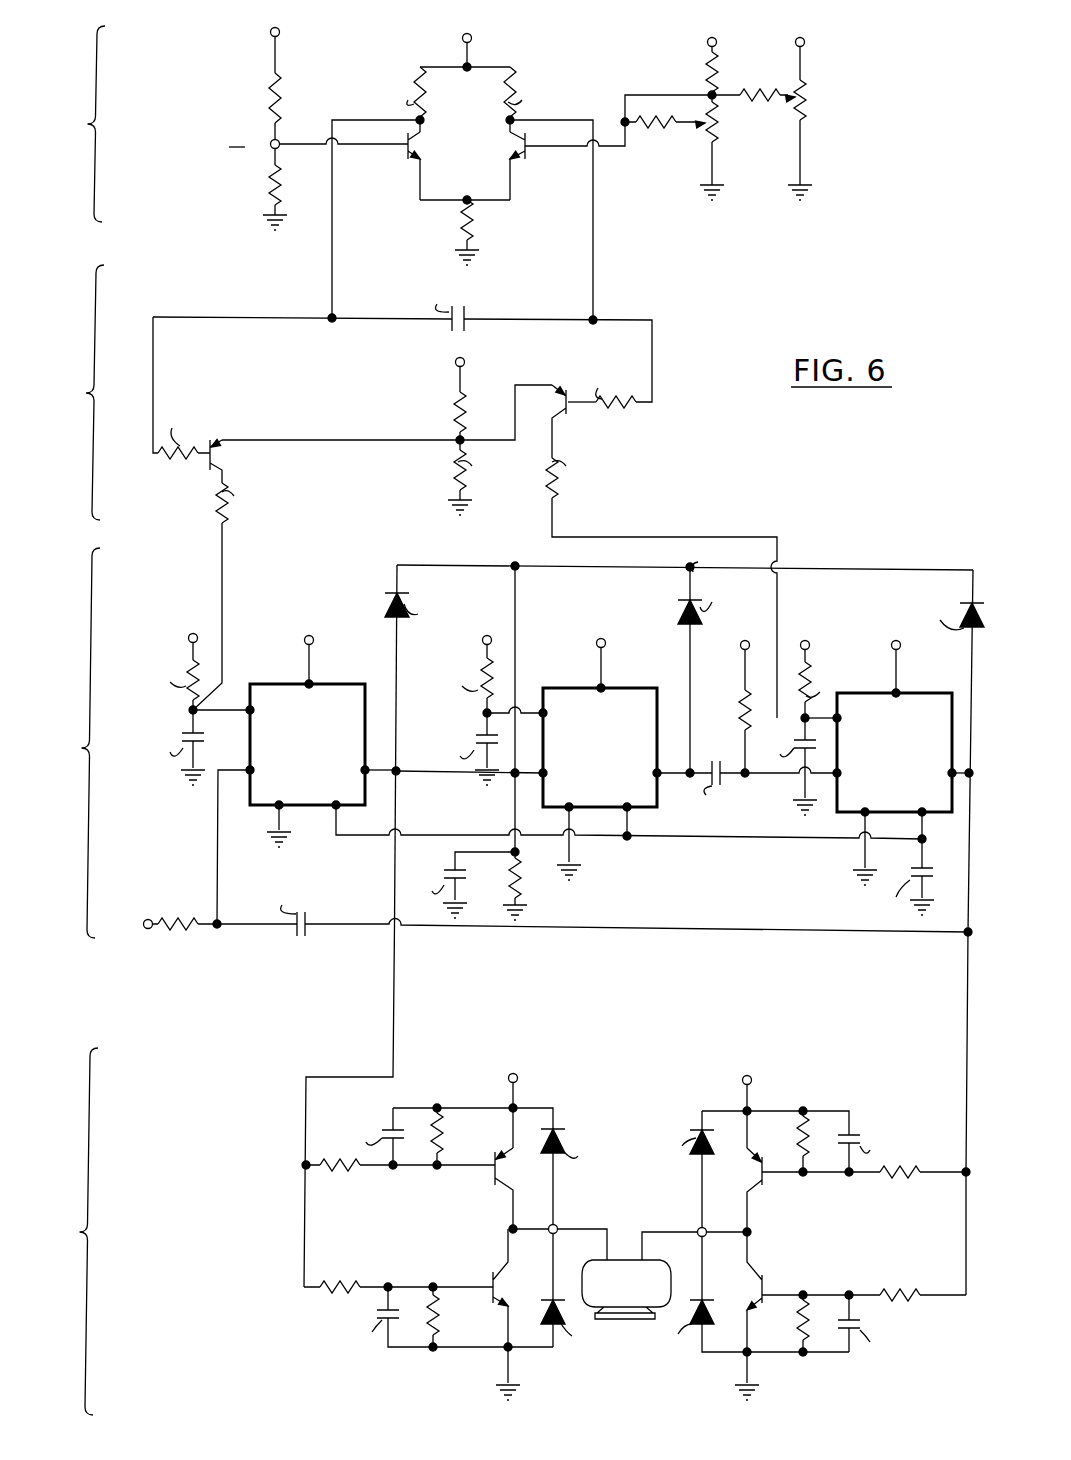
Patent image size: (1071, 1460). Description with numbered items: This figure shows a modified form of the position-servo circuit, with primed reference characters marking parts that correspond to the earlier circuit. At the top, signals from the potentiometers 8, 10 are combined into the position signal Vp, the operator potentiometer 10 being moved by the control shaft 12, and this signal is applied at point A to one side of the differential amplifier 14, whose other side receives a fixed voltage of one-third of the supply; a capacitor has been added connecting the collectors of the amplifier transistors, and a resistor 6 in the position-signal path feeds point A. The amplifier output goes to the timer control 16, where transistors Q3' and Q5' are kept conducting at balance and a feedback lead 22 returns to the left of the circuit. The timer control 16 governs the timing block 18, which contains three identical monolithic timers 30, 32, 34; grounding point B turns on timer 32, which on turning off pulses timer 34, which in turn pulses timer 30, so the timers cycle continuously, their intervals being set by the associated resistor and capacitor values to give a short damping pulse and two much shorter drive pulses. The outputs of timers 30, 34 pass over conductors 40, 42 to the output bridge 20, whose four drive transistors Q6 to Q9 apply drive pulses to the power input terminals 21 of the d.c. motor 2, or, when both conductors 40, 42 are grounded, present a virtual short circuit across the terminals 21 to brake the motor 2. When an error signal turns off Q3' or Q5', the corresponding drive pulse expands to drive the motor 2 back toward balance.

The differential amplifier 14 is at (443, 162).
The timer control 16 is at (406, 491).
The timing block 18 is at (510, 742).
The output bridge 20 is at (502, 1231).
The feedback line 22 is at (150, 373).
The timer 30 is at (324, 686).
The timer 32 is at (614, 690).
The timer 34 is at (908, 695).
The conductor 40 is at (394, 973).
The conductor 42 is at (966, 1056).
The power input terminals 21 is at (699, 1228).
The d.c. motor 2 is at (658, 1266).
The resistor 6 is at (694, 128).
The potentiometer 8 is at (716, 112).
The operator potentiometer 10 is at (810, 102).
The control shaft 12 is at (790, 92).